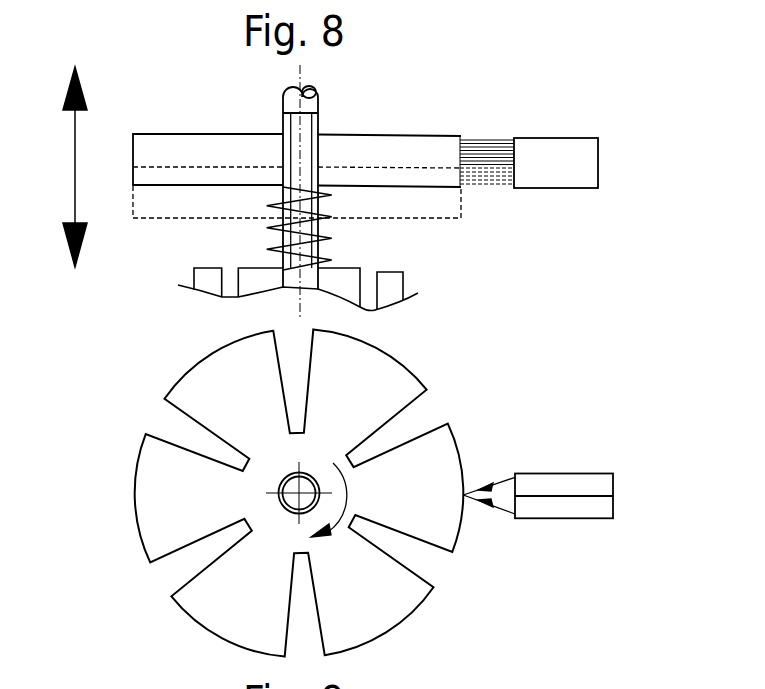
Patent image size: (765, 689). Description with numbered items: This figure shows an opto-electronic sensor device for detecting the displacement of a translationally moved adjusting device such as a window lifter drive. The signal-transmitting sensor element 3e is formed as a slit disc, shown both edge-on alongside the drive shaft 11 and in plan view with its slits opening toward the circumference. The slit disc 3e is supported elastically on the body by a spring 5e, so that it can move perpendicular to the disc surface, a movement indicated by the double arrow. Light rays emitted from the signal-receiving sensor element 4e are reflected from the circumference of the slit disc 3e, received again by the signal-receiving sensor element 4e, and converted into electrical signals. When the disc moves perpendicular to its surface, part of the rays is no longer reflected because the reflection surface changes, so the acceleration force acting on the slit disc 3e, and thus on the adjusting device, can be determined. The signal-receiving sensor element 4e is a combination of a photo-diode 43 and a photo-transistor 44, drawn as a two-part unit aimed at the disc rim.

The drive shaft 11 is at (283, 107).
The signal-transmitting sensor element 3e is at (407, 150).
The signal-receiving sensor element 4e is at (552, 172).
The spring 5e is at (332, 238).
The photo-diode 43 is at (577, 485).
The photo-transistor 44 is at (557, 508).